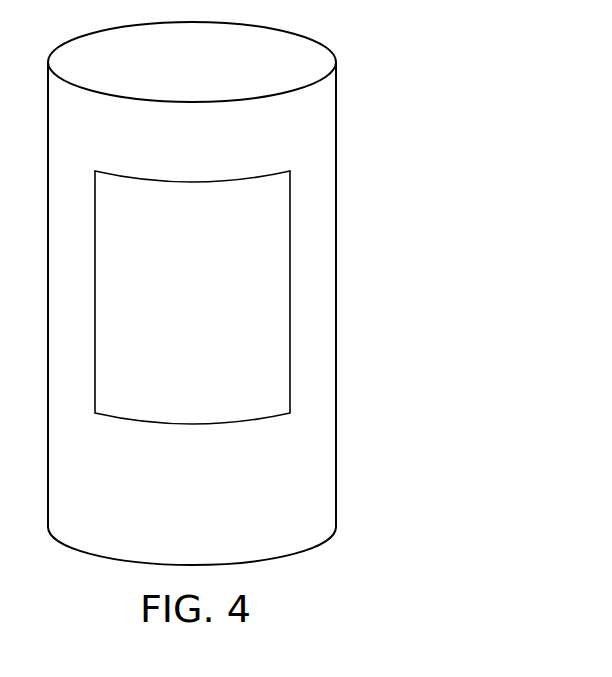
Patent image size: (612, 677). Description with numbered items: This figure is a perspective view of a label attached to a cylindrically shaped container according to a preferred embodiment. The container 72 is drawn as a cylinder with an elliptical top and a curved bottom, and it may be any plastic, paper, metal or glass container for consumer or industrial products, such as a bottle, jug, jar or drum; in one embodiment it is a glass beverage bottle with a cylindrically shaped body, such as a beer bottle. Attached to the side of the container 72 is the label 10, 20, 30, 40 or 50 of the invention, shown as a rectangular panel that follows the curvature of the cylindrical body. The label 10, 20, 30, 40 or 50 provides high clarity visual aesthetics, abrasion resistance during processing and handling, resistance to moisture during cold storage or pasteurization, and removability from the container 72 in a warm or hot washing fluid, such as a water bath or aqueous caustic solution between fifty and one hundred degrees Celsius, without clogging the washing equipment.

The container 72 is at (336, 123).
The label 10 is at (330, 297).
The label 20 is at (330, 297).
The label 30 is at (330, 297).
The label 40 is at (330, 297).
The label 50 is at (290, 263).